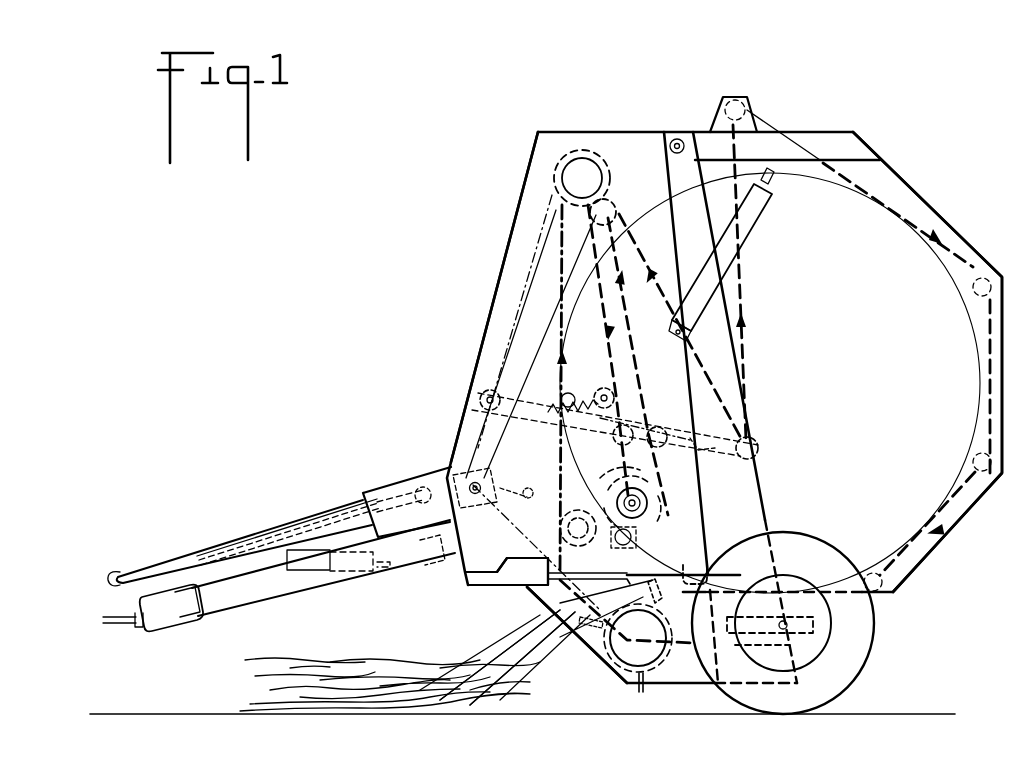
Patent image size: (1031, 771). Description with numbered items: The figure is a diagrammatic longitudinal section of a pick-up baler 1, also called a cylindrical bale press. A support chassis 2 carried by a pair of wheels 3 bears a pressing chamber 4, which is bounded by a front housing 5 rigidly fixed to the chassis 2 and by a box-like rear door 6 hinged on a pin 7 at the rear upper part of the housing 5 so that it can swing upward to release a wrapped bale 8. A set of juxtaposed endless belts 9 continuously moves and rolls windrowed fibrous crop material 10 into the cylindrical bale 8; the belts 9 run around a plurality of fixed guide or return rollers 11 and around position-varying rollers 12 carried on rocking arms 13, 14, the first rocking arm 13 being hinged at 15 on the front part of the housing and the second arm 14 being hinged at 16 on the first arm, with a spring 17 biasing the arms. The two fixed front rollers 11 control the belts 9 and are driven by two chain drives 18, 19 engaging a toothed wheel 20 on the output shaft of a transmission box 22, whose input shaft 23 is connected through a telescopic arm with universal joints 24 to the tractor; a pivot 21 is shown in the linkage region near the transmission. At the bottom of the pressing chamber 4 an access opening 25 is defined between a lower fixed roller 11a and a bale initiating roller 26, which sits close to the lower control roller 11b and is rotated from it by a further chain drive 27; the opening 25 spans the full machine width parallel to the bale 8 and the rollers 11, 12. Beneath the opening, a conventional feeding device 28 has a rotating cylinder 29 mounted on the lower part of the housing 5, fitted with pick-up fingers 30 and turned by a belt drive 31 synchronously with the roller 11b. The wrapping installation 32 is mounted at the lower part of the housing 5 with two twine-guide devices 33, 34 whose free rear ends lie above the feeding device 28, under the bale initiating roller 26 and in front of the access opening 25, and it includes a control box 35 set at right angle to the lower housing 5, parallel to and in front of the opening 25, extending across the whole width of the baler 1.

The pick-up baler 1 is at (477, 148).
The support chassis 2 is at (410, 570).
The wheels 3 is at (855, 657).
The pressing chamber 4 is at (770, 383).
The front housing 5 is at (490, 303).
The rear door 6 is at (925, 195).
The pin 7 is at (677, 139).
The bale 8 is at (805, 175).
The endless belts 9 is at (743, 293).
The windrowed fibrous crop materials 10 is at (268, 680).
The fixed guide or return rollers 11 is at (873, 575).
The lower fixed roller 11a is at (700, 575).
The lower control roller 11b is at (560, 515).
The position-varying rollers 12 is at (758, 450).
The first rocking arm 13 is at (507, 403).
The second rocking arm 14 is at (610, 404).
The hinge 15 is at (477, 396).
The hinge 16 is at (683, 445).
The spring 17 is at (562, 394).
The chain drive 18 is at (537, 250).
The chain drive 19 is at (514, 522).
The toothed wheel 20 is at (480, 467).
The pivot pin 21 is at (467, 502).
The transmission box 22 is at (445, 478).
The input shaft 23 is at (440, 503).
The telescopic arm with universal joints 24 is at (228, 540).
The access opening 25 is at (655, 585).
The bale initiating roller 26 is at (657, 533).
The chain drive 27 is at (597, 500).
The feeding device 28 is at (612, 665).
The cylinder 29 is at (660, 665).
The pick-up fingers 30 is at (641, 692).
The belt drive 31 is at (585, 583).
The wrapping installation 32 is at (512, 592).
The twine-guide device 33 is at (565, 608).
The twine-guide device 34 is at (507, 657).
The control box 35 is at (473, 575).